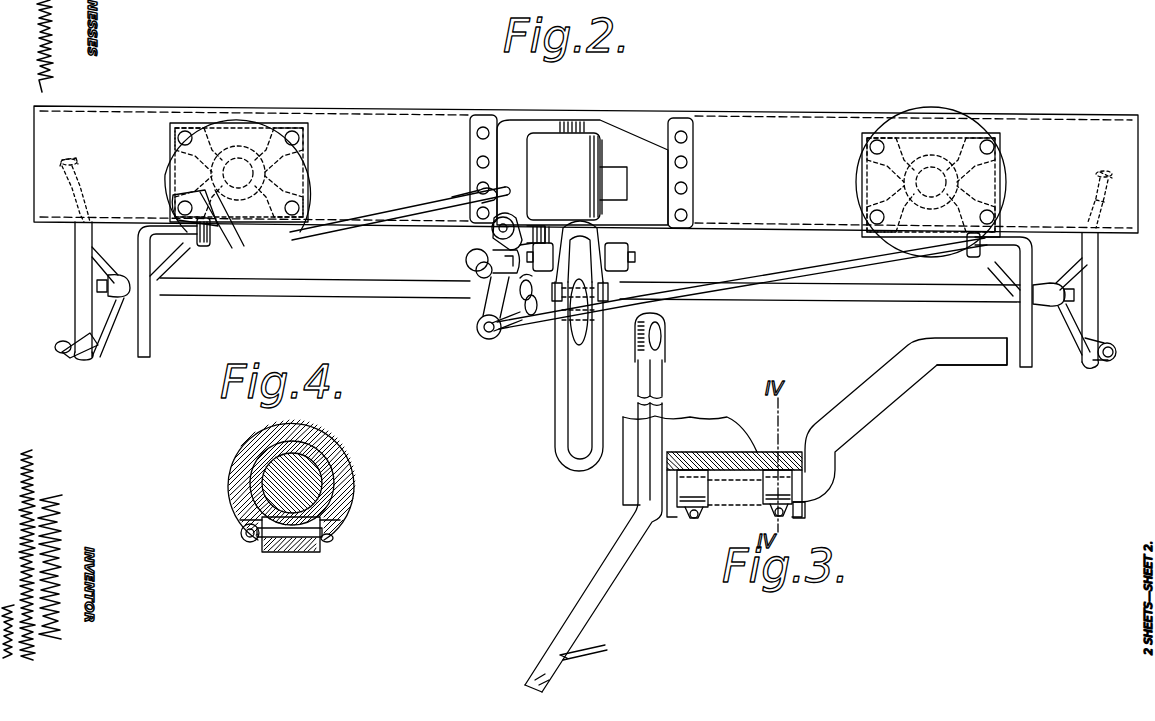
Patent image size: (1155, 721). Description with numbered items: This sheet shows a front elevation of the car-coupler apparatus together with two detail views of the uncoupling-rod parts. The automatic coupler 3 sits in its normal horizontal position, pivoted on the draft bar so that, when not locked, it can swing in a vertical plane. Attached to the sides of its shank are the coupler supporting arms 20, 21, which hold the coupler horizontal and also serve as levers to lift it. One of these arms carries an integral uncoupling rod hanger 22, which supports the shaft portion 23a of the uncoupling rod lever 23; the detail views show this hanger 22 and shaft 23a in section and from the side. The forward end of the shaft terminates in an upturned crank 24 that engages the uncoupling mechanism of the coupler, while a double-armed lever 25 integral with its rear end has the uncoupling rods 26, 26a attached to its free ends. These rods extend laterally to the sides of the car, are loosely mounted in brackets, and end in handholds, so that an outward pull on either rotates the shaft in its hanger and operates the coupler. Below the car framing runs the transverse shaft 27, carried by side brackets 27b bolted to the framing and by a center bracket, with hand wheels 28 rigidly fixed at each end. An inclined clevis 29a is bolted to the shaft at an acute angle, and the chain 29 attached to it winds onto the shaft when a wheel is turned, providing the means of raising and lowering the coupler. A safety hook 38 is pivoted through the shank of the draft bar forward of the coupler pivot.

In FIG. 2, the automatic coupler 3 is at (581, 171).
In FIG. 2, the coupler supporting arm 20 is at (545, 256).
In FIG. 2, the coupler supporting arm 21 is at (630, 238).
In FIG. 2, the uncoupling rod hanger 22 is at (477, 271).
In FIG. 3, the uncoupling rod hanger 22 is at (702, 458).
In FIG. 4, the uncoupling rod hanger 22 is at (337, 455).
In FIG. 2, the uncoupling rod lever 23 is at (470, 258).
In FIG. 3, the uncoupling rod lever 23 is at (827, 470).
In FIG. 3, the shaft portion 23a is at (742, 492).
In FIG. 4, the shaft portion 23a is at (316, 478).
In FIG. 2, the upturned crank 24 is at (494, 240).
In FIG. 3, the upturned crank 24 is at (937, 362).
In FIG. 2, the double-armed lever 25 is at (480, 193).
In FIG. 3, the double-armed lever 25 is at (655, 414).
In FIG. 2, the uncoupling rod 26 is at (380, 215).
In FIG. 2, the uncoupling rod 26a is at (738, 287).
In FIG. 2, the transverse shaft 27 is at (250, 287).
In FIG. 2, the side bracket 27b is at (178, 246).
In FIG. 2, the hand wheel 28 is at (82, 272).
In FIG. 2, the chain 29 is at (517, 320).
In FIG. 2, the inclined clevis 29a is at (499, 338).
In FIG. 2, the safety hook 38 is at (577, 335).